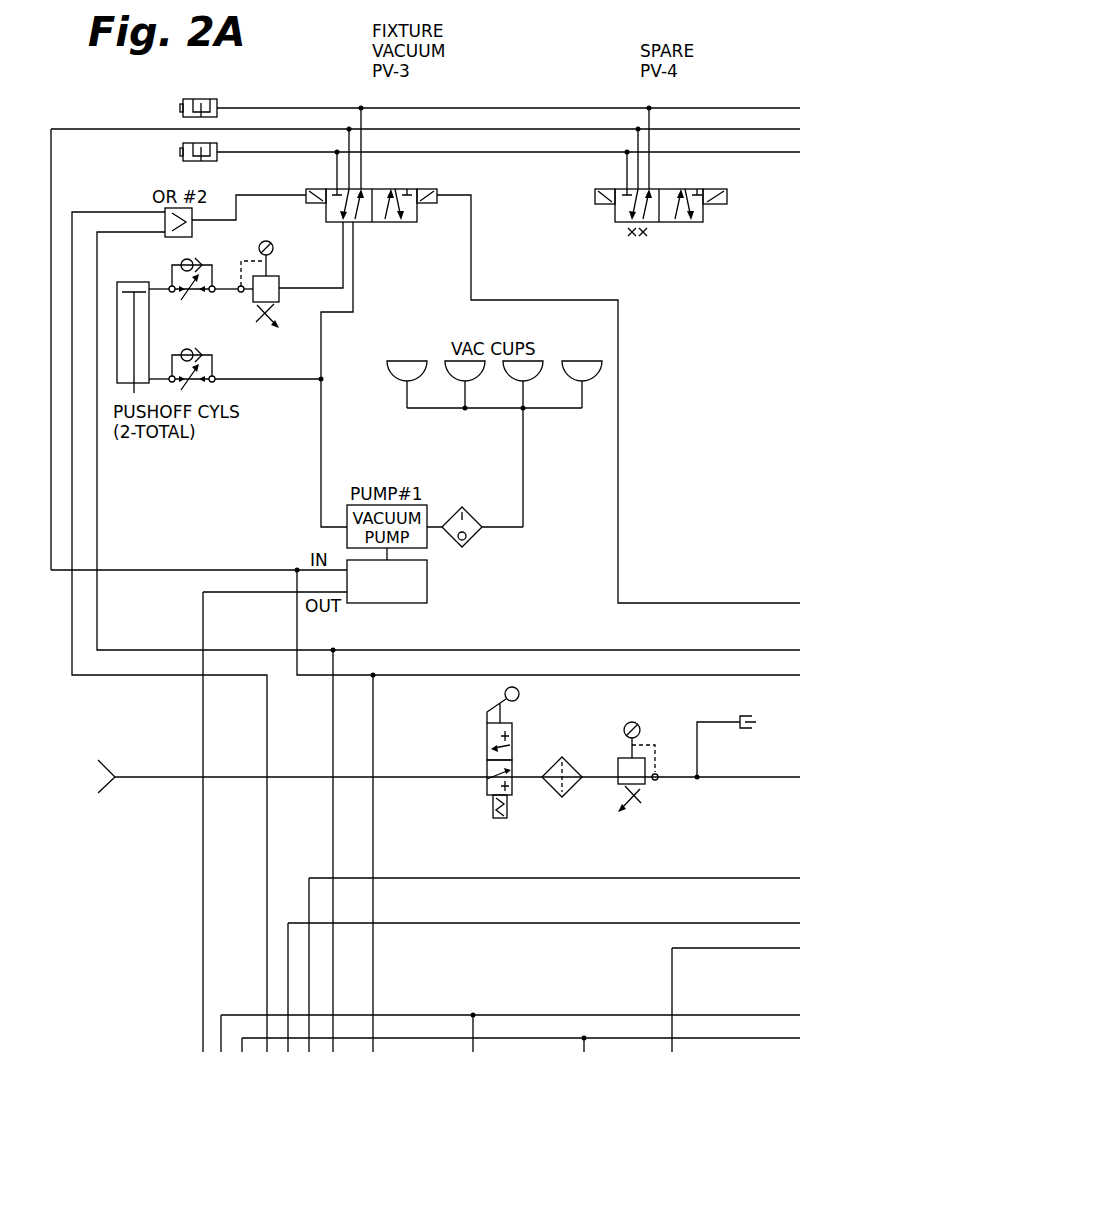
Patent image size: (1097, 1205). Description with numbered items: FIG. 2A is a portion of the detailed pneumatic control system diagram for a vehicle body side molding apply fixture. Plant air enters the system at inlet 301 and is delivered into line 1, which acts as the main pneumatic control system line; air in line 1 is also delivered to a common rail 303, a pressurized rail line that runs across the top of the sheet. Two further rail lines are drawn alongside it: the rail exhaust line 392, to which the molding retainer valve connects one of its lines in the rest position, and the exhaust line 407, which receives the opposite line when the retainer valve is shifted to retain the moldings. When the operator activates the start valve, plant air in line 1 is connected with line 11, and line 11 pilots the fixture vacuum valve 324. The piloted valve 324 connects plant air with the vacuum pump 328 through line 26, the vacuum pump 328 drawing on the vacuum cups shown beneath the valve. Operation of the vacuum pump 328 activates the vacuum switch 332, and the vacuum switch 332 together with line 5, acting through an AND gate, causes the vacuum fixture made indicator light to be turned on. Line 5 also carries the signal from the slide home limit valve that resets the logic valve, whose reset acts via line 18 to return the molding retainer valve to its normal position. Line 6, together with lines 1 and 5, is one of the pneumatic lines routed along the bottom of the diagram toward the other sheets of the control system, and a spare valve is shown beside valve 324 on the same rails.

The line 1 is at (760, 675).
The line 5 is at (230, 1015).
The pneumatic line 6 is at (201, 1003).
The line 11 is at (760, 603).
The line 18 is at (760, 650).
The line 26 is at (321, 420).
The plant air inlet 301 is at (77, 803).
The common rail 303 is at (765, 128).
The valve 324 is at (377, 222).
The vacuum pump 328 is at (428, 510).
The vacuum switch 332 is at (427, 590).
The rail exhaust line 392 is at (757, 152).
The exhaust line 407 is at (735, 107).